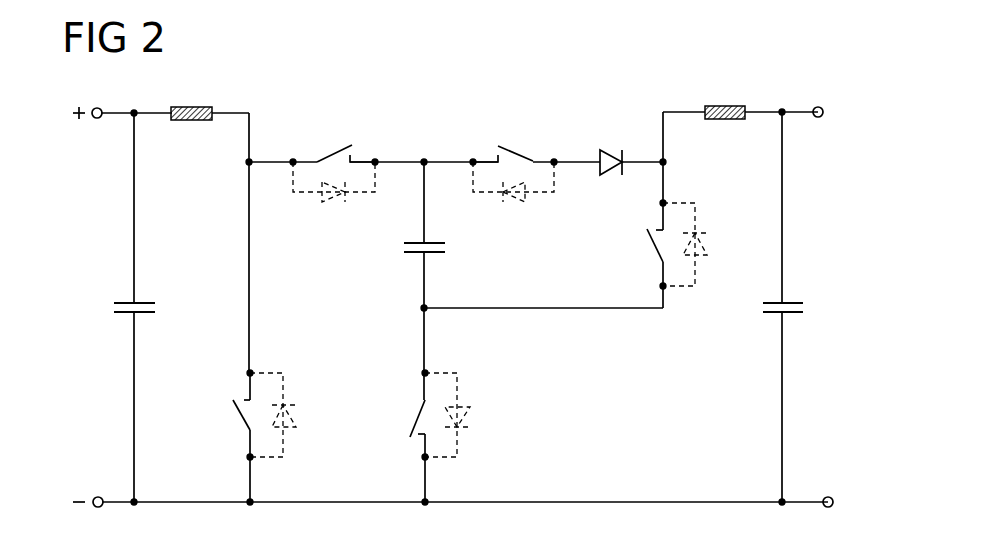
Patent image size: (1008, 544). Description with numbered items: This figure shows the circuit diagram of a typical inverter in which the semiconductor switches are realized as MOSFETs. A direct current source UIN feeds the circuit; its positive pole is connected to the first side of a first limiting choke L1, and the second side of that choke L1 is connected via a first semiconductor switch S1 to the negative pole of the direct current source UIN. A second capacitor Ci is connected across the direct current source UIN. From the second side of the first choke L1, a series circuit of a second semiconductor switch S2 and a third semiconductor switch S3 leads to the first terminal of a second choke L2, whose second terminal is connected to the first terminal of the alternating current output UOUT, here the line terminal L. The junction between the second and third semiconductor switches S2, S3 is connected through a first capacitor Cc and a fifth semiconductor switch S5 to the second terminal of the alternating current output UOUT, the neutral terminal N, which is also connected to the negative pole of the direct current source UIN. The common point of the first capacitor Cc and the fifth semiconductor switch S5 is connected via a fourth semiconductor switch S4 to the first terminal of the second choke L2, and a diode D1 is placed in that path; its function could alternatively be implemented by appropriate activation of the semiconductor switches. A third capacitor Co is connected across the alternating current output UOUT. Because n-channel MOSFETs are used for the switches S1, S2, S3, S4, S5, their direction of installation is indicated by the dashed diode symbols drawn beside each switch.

The first limiting choke L1 is at (191, 106).
The second choke L2 is at (724, 106).
The second capacitor Ci is at (148, 310).
The third capacitor Co is at (765, 310).
The first capacitor Cc is at (404, 249).
The first semiconductor switch S1 is at (239, 423).
The second semiconductor switch S2 is at (336, 148).
The third semiconductor switch S3 is at (515, 148).
The fourth semiconductor switch S4 is at (651, 246).
The fifth semiconductor switch S5 is at (413, 418).
The diode D1 is at (607, 150).
The direct current source UIN is at (72, 216).
The alternating current output UOUT is at (852, 241).
The line terminal L is at (824, 112).
The neutral terminal N is at (834, 502).